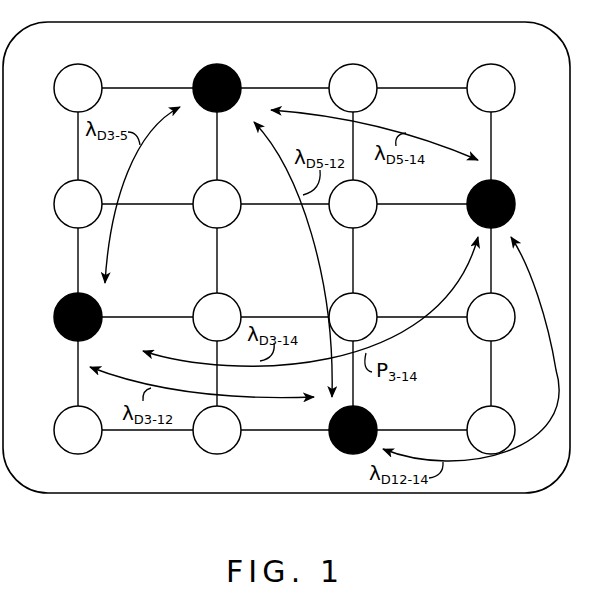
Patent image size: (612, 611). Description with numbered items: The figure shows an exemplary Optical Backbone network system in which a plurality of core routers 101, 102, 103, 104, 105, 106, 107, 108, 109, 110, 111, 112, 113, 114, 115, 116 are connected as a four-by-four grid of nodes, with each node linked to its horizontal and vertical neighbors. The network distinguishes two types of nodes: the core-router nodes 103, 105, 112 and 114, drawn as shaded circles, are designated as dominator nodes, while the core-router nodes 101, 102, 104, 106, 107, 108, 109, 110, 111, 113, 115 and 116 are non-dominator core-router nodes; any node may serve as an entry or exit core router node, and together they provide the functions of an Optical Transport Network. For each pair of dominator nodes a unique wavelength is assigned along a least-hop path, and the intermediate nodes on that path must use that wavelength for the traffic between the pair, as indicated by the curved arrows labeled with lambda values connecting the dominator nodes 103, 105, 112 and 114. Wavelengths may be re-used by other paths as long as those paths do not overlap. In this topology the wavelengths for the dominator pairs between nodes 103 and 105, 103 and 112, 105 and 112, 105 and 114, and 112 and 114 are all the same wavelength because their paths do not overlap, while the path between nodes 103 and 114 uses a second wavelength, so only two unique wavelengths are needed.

The core router 101 is at (79, 64).
The core router 102 is at (62, 186).
The core router 103 is at (60, 301).
The core router 104 is at (60, 413).
The core router 105 is at (198, 75).
The core router 106 is at (204, 226).
The core router 107 is at (234, 299).
The core router 108 is at (218, 455).
The core router 109 is at (386, 58).
The core router 110 is at (372, 225).
The core router 111 is at (372, 300).
The core router 112 is at (350, 455).
The core router 113 is at (476, 71).
The core router 114 is at (500, 181).
The core router 115 is at (479, 338).
The core router 116 is at (477, 408).